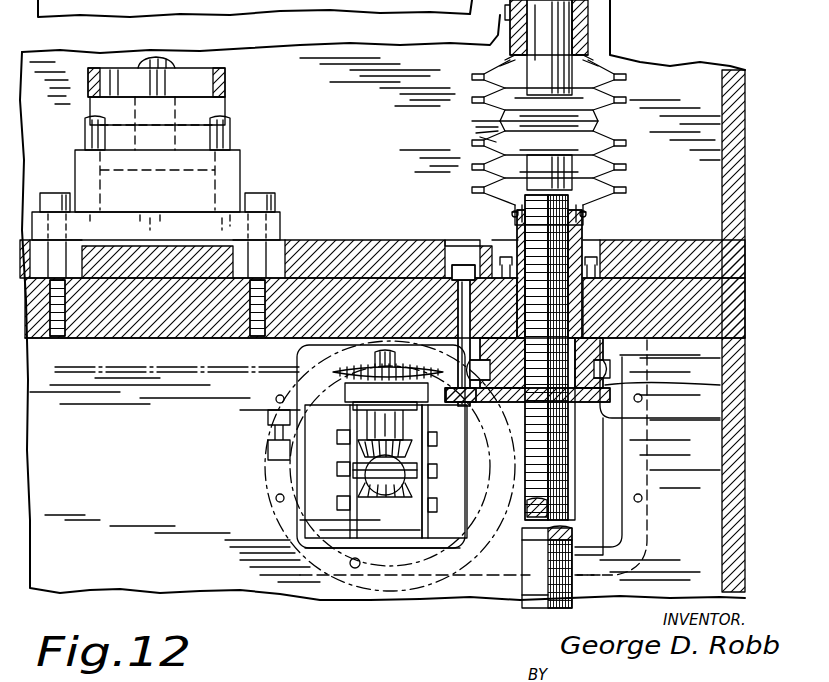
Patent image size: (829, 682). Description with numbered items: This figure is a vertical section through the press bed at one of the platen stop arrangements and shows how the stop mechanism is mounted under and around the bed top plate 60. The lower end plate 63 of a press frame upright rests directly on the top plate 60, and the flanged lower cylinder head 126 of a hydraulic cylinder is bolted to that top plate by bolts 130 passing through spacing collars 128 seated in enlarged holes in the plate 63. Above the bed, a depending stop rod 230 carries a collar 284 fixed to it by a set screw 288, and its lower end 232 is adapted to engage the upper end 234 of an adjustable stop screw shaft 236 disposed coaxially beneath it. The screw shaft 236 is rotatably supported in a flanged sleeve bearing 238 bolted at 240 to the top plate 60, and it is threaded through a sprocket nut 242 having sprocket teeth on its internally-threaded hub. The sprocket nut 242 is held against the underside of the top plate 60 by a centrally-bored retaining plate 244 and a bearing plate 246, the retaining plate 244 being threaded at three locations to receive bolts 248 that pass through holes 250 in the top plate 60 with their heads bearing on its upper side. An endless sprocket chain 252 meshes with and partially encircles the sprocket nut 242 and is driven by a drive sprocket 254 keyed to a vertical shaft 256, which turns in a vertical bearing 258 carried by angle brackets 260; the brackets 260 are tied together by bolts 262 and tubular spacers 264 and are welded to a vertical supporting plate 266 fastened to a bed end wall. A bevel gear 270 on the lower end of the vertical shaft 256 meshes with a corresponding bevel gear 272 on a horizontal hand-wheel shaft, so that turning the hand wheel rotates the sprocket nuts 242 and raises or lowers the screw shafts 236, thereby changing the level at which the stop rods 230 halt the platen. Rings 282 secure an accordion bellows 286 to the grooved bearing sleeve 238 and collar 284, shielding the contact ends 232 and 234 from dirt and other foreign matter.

The bed top plate 60 is at (118, 340).
The lower end plate 63 is at (376, 248).
The lower cylinder head 126 is at (238, 152).
The spacing collar 128 is at (292, 232).
The bolt 130 is at (260, 193).
The stop rod 230 is at (530, 62).
The lower end of stop rod 232 is at (474, 104).
The upper end of stop screw shaft 234 is at (478, 140).
The stop screw shaft 236 is at (518, 212).
The flanged sleeve bearing 238 is at (584, 236).
The bolt 240 is at (584, 248).
The sprocket nut 242 is at (722, 352).
The retaining plate 244 is at (722, 408).
The bearing plate 246 is at (722, 386).
The bolt 248 is at (444, 238).
The hole 250 is at (458, 262).
The sprocket chain 252 is at (110, 374).
The drive sprocket 254 is at (345, 392).
The vertical shaft 256 is at (335, 370).
The vertical bearing 258 is at (270, 398).
The angle bracket 260 is at (424, 527).
The bolt 262 is at (340, 505).
The tubular spacer 264 is at (438, 505).
The vertical supporting plate 266 is at (360, 548).
The bevel gear 270 is at (358, 447).
The bevel gear 272 is at (348, 470).
The ring 282 is at (600, 45).
The collar 284 is at (598, 26).
The accordion bellows 286 is at (624, 102).
The set screw 288 is at (512, 12).